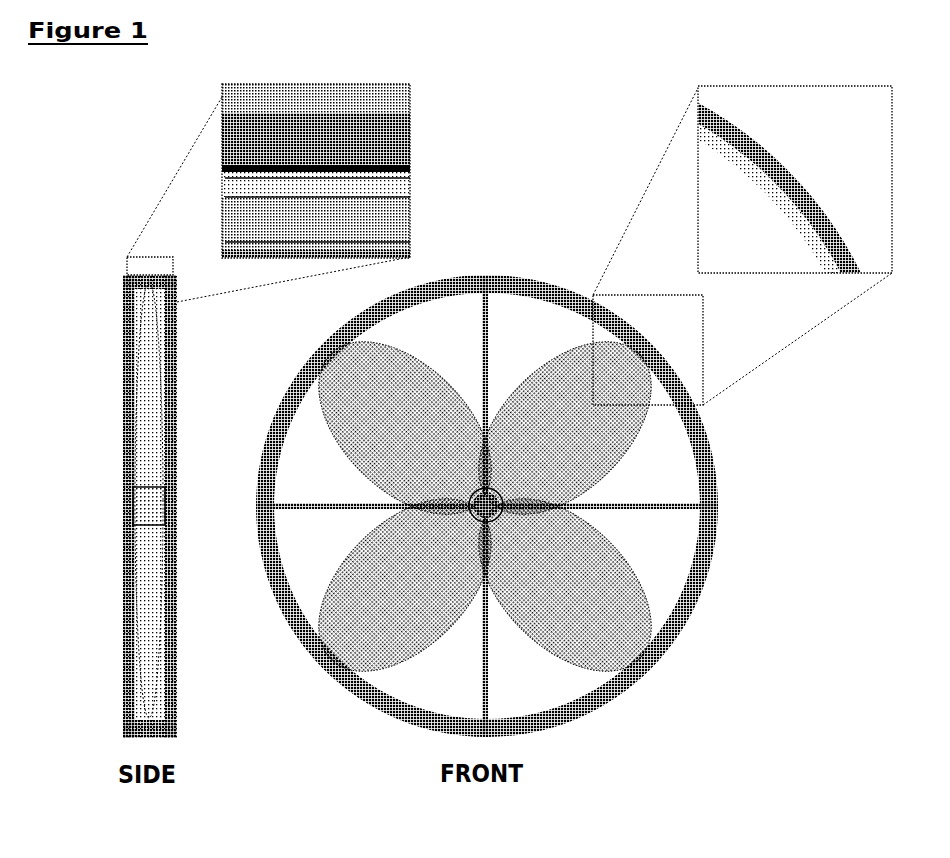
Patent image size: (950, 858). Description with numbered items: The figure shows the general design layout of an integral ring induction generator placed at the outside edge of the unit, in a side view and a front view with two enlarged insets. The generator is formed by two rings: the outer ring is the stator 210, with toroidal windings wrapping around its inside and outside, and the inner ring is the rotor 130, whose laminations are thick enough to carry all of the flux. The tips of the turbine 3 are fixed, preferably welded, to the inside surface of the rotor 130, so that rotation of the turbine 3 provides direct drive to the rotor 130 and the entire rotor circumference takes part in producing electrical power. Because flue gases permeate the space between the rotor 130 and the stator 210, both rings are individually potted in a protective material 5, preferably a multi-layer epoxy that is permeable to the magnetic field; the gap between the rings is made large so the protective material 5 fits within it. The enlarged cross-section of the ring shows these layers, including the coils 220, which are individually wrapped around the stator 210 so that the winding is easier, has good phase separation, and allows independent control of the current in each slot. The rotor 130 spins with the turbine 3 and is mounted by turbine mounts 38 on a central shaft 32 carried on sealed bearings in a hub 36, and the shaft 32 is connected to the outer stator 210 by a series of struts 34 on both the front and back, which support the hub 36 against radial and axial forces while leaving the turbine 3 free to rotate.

The turbine 3 is at (462, 497).
The protective material 5 is at (428, 100).
The central shaft 32 is at (168, 505).
The struts 34 is at (328, 510).
The hub 36 is at (496, 500).
The turbine mounts 38 is at (628, 662).
The rotor 130 is at (412, 200).
The stator 210 is at (226, 103).
The coils 220 is at (363, 148).